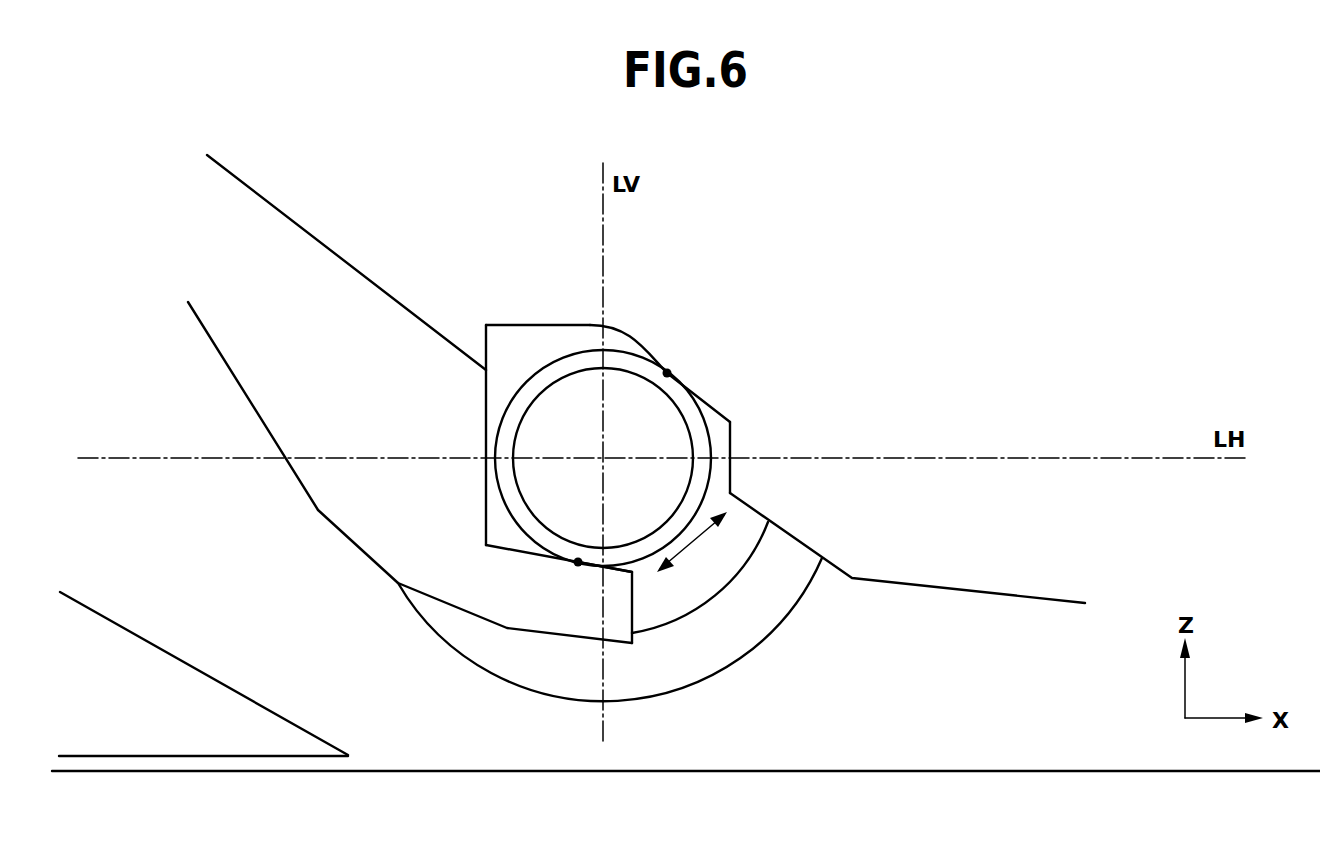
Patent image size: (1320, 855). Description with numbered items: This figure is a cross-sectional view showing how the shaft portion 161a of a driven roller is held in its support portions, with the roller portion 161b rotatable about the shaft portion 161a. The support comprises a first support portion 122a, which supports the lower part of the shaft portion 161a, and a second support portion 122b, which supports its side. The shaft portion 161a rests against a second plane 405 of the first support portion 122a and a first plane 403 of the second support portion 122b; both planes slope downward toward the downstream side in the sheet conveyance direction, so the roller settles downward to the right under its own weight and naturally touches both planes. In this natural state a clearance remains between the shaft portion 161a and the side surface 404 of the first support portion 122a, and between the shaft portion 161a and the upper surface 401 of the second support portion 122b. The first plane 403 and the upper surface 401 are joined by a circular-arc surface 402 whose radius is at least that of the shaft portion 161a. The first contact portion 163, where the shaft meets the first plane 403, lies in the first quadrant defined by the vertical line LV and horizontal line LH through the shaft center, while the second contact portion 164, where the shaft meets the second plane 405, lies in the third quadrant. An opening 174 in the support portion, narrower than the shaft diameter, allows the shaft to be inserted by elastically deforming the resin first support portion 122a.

The first support portion 122a is at (470, 572).
The second support portion 122b is at (482, 295).
The shaft portion 161a is at (698, 443).
The roller portion 161b is at (755, 615).
The first contact portion 163 is at (668, 372).
The second contact portion 164 is at (578, 563).
The opening 174 is at (733, 558).
The upper surface 401 is at (550, 325).
The circular-arc surface 402 is at (618, 330).
The first plane 403 is at (713, 400).
The side surface 404 is at (486, 405).
The second plane 405 is at (522, 553).